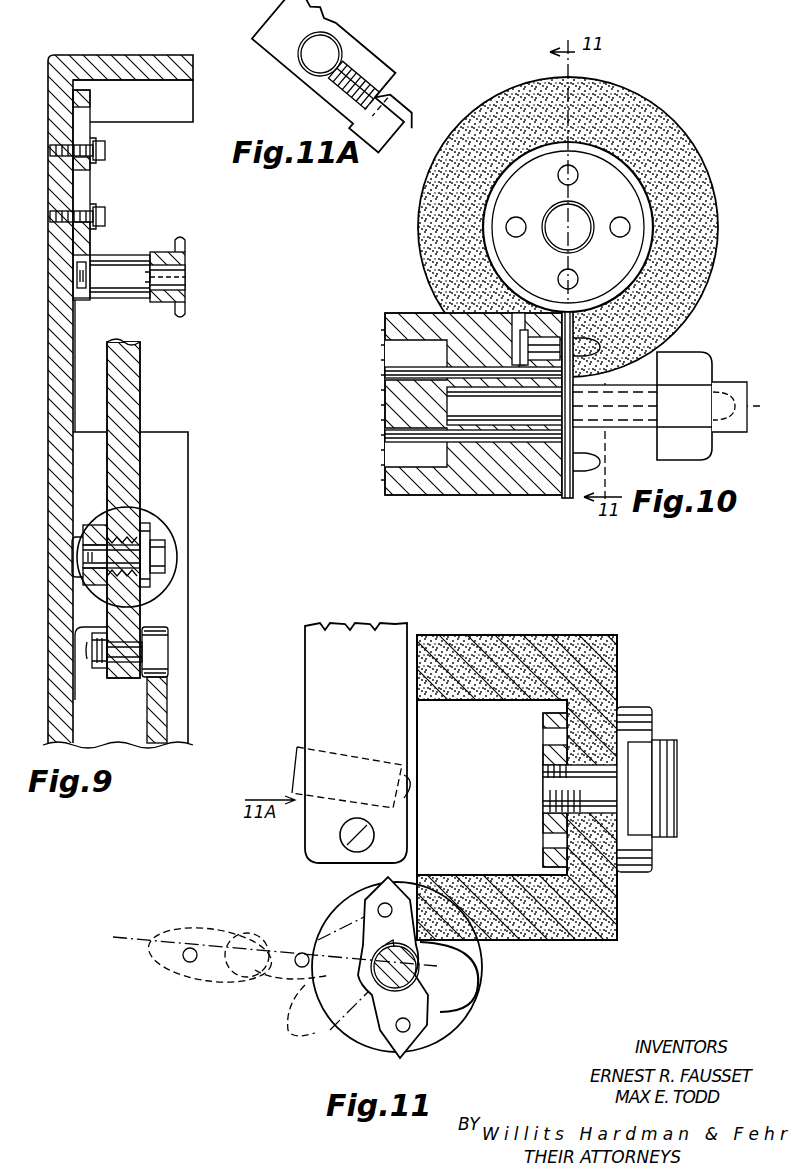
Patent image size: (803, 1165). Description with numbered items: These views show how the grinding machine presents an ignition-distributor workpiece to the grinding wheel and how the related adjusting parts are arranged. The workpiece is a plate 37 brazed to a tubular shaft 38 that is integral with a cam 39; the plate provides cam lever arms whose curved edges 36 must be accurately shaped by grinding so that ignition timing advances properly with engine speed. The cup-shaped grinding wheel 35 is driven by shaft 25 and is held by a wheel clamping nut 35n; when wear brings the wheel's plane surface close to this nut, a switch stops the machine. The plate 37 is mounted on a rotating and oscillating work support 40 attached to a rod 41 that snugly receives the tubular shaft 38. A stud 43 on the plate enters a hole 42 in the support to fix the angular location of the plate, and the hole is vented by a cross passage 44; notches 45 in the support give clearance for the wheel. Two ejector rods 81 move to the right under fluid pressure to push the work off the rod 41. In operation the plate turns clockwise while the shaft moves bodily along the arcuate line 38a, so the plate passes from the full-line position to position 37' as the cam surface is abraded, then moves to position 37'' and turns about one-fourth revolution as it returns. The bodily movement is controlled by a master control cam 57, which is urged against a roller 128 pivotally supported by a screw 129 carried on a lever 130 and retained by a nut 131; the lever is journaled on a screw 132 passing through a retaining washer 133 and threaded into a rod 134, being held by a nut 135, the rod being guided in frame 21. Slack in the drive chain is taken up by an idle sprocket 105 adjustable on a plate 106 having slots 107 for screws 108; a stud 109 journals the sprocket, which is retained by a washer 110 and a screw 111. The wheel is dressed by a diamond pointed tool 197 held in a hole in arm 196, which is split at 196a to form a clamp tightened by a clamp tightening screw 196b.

In FIG. 9, the frame 21 is at (55, 62).
In FIG. 9, the plate 106 is at (90, 100).
In FIG. 9, the slots 107 is at (84, 130).
In FIG. 9, the screws 108 is at (105, 152).
In FIG. 9, the stud 109 is at (130, 303).
In FIG. 9, the washer 110 is at (185, 265).
In FIG. 9, the idle sprocket 105 is at (182, 238).
In FIG. 9, the screw 111 is at (186, 277).
In FIG. 9, the lever 130 is at (140, 393).
In FIG. 9, the rod 134 is at (95, 525).
In FIG. 9, the nut 135 is at (72, 556).
In FIG. 9, the retaining washer 133 is at (150, 540).
In FIG. 9, the screw 132 is at (130, 548).
In FIG. 9, the screw 129 is at (138, 680).
In FIG. 9, the nut 131 is at (98, 650).
In FIG. 9, the roller 128 is at (168, 645).
In FIG. 9, the master control cam 57 is at (154, 738).
In FIG. 11A, the arm 196 is at (292, 63).
In FIG. 11, the arm 196 is at (322, 672).
In FIG. 11A, the diamond pointed tool 197 is at (332, 50).
In FIG. 11, the diamond pointed tool 197 is at (297, 747).
In FIG. 11A, the split 196a is at (374, 112).
In FIG. 11A, the clamp tightening screw 196b is at (402, 72).
In FIG. 11, the clamp tightening screw 196b is at (340, 836).
In FIG. 10, the grinding wheel 35 is at (718, 205).
In FIG. 11, the grinding wheel 35 is at (617, 668).
In FIG. 10, the wheel clamping nut 35n is at (628, 197).
In FIG. 11, the wheel clamping nut 35n is at (543, 720).
In FIG. 10, the shaft 25 is at (585, 212).
In FIG. 11, the shaft 25 is at (670, 740).
In FIG. 10, the work support 40 is at (490, 495).
In FIG. 11, the work support 40 is at (465, 1020).
In FIG. 10, the cross passage 44 is at (512, 340).
In FIG. 10, the stud 43 is at (548, 336).
In FIG. 10, the hole 42 is at (524, 330).
In FIG. 10, the ejector rods 81 is at (385, 372).
In FIG. 10, the rod 41 is at (447, 406).
In FIG. 10, the plate 37 is at (569, 420).
In FIG. 11, the plate 37 is at (410, 967).
In FIG. 10, the tubular shaft 38 is at (618, 427).
In FIG. 11, the tubular shaft 38 is at (419, 968).
In FIG. 10, the cam 39 is at (700, 352).
In FIG. 11, the curved edges 36 is at (410, 878).
In FIG. 11, the notches 45 is at (478, 962).
In FIG. 11, the arcuate line 38a is at (140, 940).
In FIG. 11, the plate position 37'' is at (237, 966).
In FIG. 11, the dot-dash line position 37' is at (288, 1025).